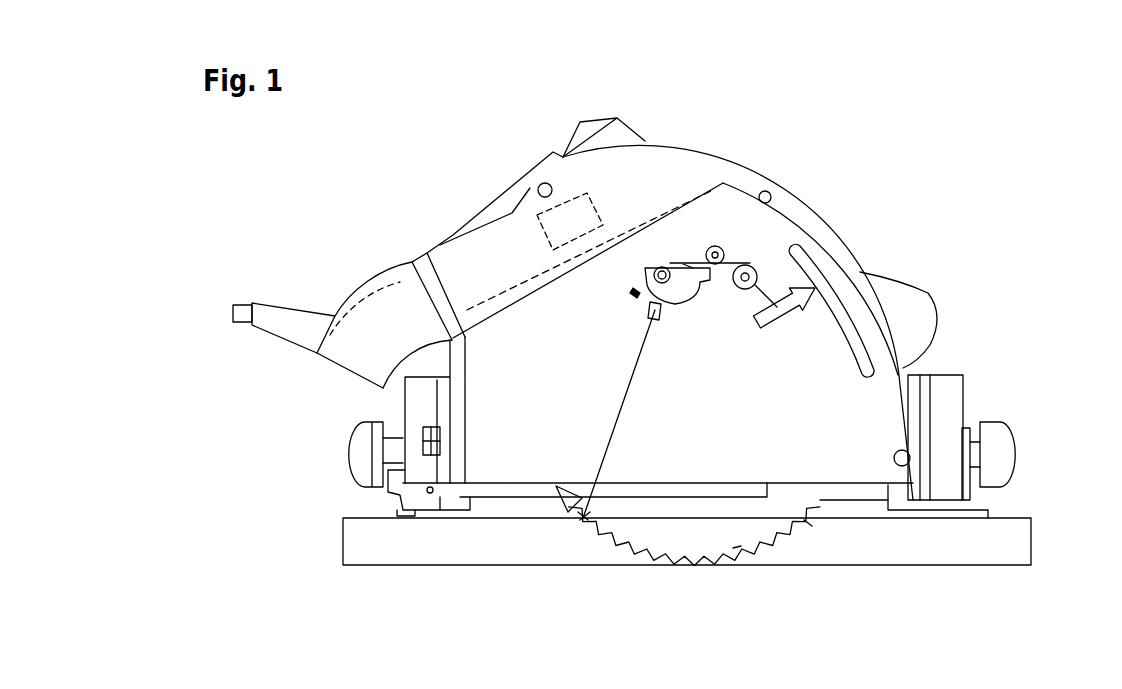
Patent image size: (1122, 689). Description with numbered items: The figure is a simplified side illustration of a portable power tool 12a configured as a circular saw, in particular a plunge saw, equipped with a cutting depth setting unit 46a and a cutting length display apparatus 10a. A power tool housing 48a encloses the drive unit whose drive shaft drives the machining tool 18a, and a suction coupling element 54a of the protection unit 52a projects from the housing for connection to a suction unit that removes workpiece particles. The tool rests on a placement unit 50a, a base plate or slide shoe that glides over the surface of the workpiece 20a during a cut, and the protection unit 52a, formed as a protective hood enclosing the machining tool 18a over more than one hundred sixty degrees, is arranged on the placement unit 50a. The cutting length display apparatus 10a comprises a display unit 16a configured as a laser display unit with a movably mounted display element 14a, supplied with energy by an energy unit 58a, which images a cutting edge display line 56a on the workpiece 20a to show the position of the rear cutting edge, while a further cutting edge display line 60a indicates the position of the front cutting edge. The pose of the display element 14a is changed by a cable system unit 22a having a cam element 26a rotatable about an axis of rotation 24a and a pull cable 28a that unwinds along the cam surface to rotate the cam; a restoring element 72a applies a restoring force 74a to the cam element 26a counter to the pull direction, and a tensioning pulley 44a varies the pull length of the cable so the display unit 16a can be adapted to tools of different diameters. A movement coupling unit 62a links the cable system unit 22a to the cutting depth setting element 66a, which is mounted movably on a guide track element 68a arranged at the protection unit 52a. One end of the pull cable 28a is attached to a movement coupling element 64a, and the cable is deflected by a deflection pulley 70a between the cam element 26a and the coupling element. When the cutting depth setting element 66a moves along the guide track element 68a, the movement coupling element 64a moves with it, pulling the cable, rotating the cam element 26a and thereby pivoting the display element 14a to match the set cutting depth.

The cutting length display apparatus 10a is at (593, 382).
The portable power tool 12a is at (1025, 180).
The display element 14a is at (655, 310).
The display unit 16a is at (708, 360).
The machining tool 18a is at (737, 542).
The workpiece 20a is at (992, 550).
The cable system unit 22a is at (753, 228).
The axis of rotation 24a is at (647, 268).
The cam element 26a is at (680, 303).
The pull cable 28a is at (687, 262).
The tensioning pulley 44a is at (717, 247).
The cutting depth setting unit 46a is at (905, 255).
The power tool housing 48a is at (598, 170).
The placement unit 50a is at (413, 513).
The protection unit 52a is at (877, 425).
The suction coupling element 54a is at (375, 310).
The cutting edge display line 56a is at (580, 520).
The energy unit 58a is at (533, 217).
The cutting edge display line 60a is at (808, 523).
The movement coupling unit 62a is at (823, 257).
The movement coupling element 64a is at (773, 318).
The cutting depth setting element 66a is at (930, 327).
The guide track element 68a is at (870, 360).
The deflection pulley 70a is at (727, 290).
The restoring element 72a is at (665, 267).
The restoring force 74a is at (635, 288).